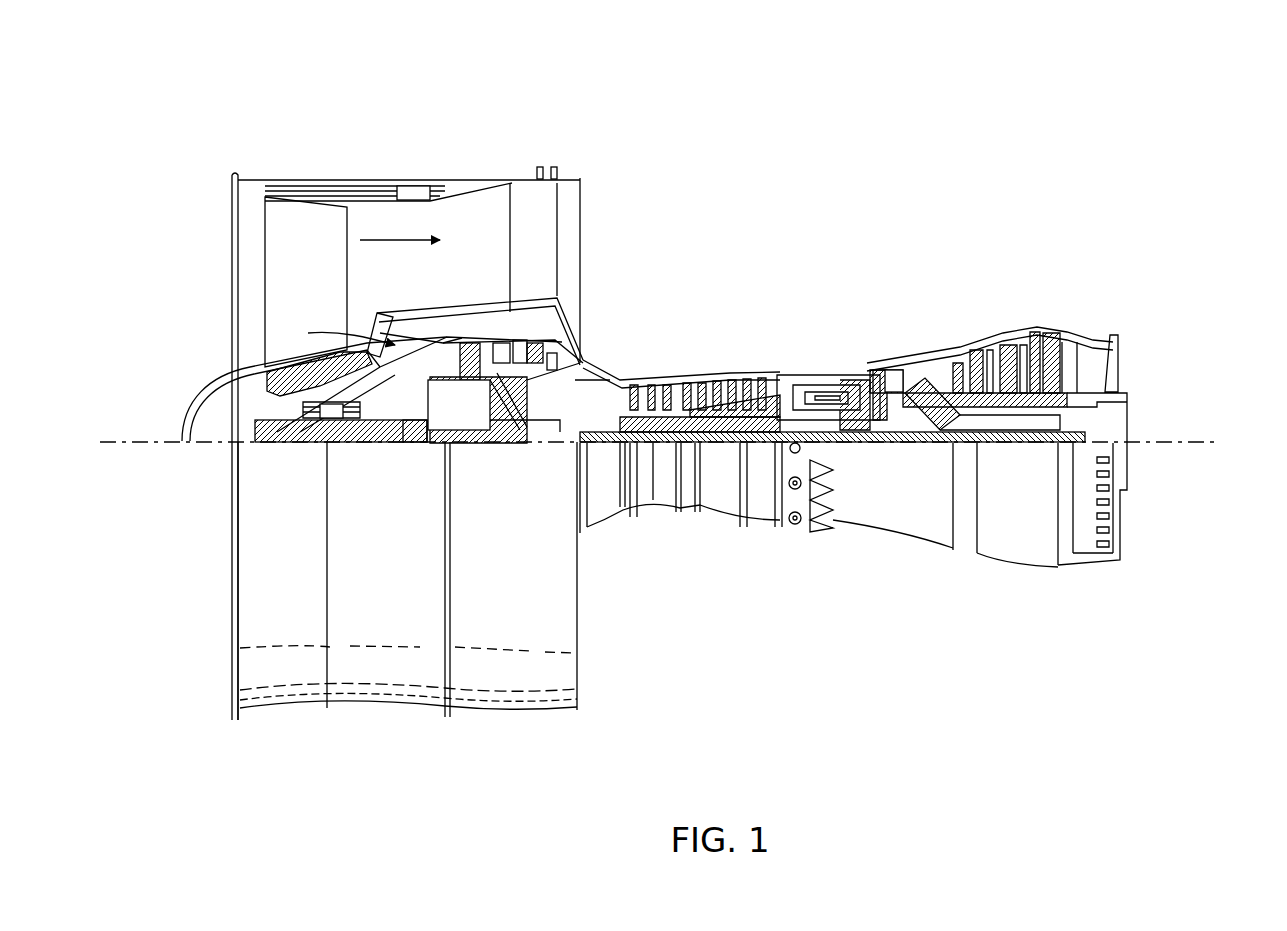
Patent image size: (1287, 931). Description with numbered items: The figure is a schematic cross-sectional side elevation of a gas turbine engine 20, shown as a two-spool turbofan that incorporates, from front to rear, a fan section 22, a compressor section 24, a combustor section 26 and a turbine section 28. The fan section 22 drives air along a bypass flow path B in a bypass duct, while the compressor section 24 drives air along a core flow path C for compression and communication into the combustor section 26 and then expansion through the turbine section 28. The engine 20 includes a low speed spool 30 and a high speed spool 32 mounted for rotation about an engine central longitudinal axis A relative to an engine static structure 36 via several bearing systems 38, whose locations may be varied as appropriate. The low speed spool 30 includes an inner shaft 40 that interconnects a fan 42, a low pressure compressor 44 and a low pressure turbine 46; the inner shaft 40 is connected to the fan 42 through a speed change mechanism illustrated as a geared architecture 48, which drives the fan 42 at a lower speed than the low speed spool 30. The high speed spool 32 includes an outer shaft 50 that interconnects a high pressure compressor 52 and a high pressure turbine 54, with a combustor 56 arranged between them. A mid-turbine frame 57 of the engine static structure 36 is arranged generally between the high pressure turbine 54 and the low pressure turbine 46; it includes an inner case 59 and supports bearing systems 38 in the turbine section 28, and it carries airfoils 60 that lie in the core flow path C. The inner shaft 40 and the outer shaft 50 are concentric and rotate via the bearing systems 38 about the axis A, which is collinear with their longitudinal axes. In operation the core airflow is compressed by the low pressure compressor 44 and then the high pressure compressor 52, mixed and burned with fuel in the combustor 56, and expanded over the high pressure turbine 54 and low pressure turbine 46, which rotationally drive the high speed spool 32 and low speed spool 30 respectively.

The gas turbine engine 20 is at (796, 226).
The fan section 22 is at (372, 271).
The compressor section 24 is at (726, 336).
The combustor section 26 is at (824, 329).
The turbine section 28 is at (1015, 335).
The low speed spool 30 is at (681, 512).
The high speed spool 32 is at (700, 359).
The engine static structure 36 is at (761, 534).
The bearing systems 38 is at (933, 447).
The inner shaft 40 is at (612, 450).
The fan 42 is at (315, 252).
The low pressure compressor 44 is at (570, 343).
The low pressure turbine 46 is at (1076, 345).
The geared architecture 48 is at (410, 447).
The outer shaft 50 is at (766, 412).
The high pressure compressor 52 is at (713, 402).
The high pressure turbine 54 is at (890, 366).
The combustor 56 is at (824, 392).
The mid-turbine frame 57 is at (938, 352).
The inner case 59 is at (975, 412).
The airfoils 60 is at (932, 382).
The engine central longitudinal axis A is at (1170, 448).
The bypass flow path B is at (390, 248).
The core flow path C is at (328, 332).